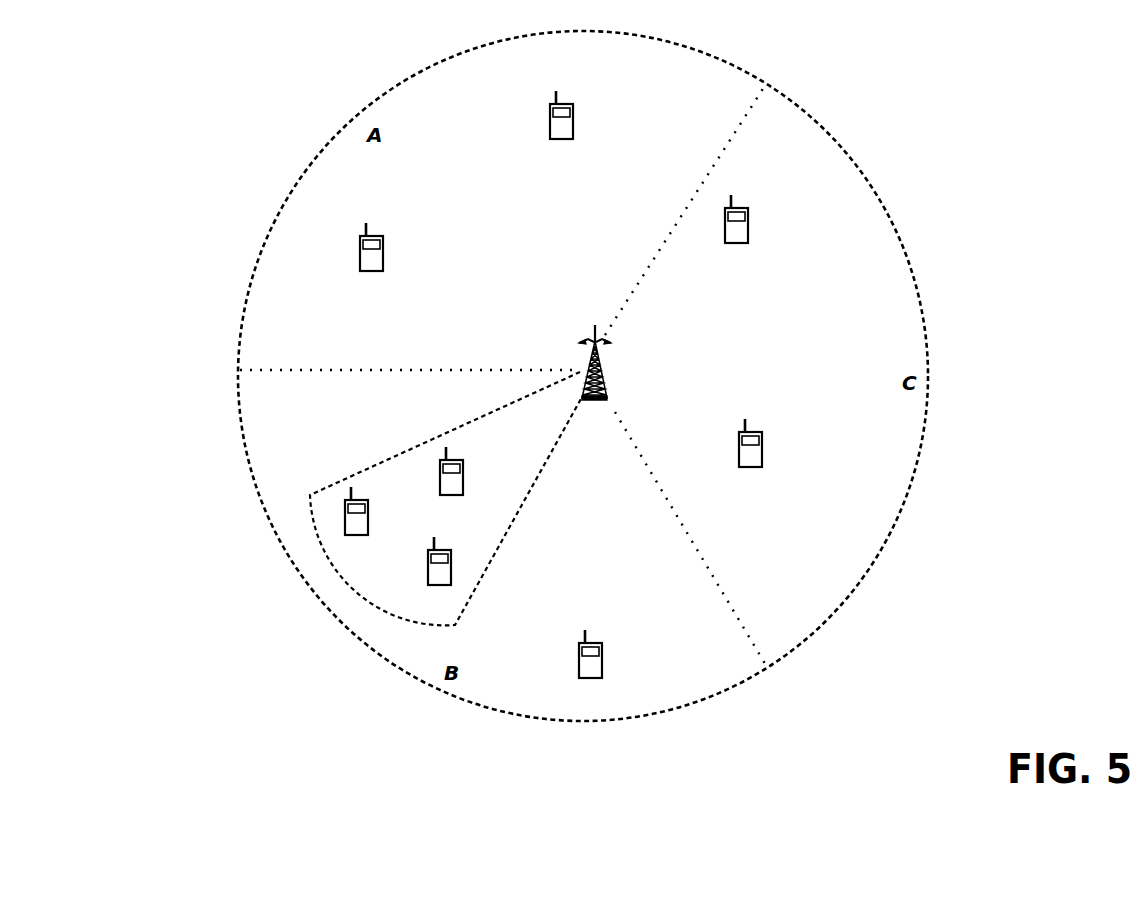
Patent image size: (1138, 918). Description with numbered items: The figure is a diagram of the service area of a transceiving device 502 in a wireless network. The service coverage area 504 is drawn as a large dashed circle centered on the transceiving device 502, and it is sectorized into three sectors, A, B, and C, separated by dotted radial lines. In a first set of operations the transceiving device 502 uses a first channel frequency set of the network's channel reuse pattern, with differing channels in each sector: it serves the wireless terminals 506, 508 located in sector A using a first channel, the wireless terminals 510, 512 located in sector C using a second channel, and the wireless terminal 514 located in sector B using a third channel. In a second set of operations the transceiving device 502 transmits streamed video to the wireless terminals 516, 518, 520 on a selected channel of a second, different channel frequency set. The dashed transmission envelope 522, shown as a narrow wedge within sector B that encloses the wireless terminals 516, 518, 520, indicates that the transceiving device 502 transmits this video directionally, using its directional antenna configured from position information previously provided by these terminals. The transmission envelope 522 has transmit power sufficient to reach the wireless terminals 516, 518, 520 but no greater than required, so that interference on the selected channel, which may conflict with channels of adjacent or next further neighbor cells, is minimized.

The transceiving device 502 is at (590, 401).
The service coverage area 504 is at (320, 154).
The wireless terminal 506 is at (383, 265).
The wireless terminal 508 is at (573, 133).
The wireless terminal 510 is at (748, 237).
The wireless terminal 512 is at (762, 461).
The wireless terminal 514 is at (602, 672).
The wireless terminal 516 is at (368, 529).
The wireless terminal 518 is at (463, 489).
The wireless terminal 520 is at (451, 553).
The transmission envelope 522 is at (500, 537).